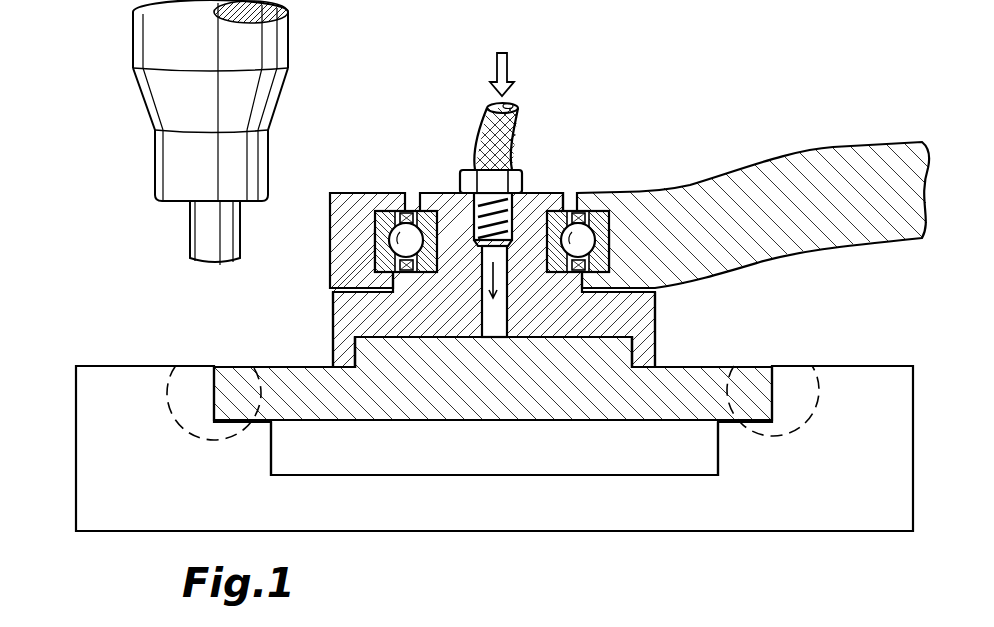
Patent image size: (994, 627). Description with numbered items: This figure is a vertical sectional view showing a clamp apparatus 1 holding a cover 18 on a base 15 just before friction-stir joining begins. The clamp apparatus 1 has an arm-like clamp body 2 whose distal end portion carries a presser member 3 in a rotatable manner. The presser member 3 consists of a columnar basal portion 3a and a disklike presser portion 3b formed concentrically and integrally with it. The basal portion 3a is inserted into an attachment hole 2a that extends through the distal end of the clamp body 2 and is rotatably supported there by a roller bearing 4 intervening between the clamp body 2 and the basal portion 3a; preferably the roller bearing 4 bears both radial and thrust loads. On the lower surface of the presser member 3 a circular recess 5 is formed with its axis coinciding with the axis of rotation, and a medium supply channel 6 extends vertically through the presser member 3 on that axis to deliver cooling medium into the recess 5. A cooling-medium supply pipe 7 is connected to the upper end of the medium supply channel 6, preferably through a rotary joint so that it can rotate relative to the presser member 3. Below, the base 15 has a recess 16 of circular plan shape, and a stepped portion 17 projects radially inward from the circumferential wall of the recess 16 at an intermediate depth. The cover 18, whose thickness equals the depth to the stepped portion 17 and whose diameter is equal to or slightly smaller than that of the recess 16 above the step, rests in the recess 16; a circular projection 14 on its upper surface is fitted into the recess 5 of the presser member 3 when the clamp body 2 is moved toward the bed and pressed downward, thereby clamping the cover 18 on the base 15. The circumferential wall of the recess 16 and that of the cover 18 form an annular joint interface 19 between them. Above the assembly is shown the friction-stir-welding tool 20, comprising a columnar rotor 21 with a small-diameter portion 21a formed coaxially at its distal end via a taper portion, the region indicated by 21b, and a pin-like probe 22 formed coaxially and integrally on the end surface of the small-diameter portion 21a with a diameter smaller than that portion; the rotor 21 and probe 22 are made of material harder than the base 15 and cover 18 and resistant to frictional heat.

The clamp apparatus 1 is at (497, 300).
The clamp body 2 is at (870, 153).
The attachment hole 2a is at (408, 207).
The presser member 3 is at (492, 240).
The basal portion 3a is at (537, 197).
The presser portion 3b is at (338, 315).
The roller bearing 4 is at (382, 213).
The recess 5 is at (493, 392).
The medium supply channel 6 is at (493, 327).
The cooling-medium supply pipe 7 is at (487, 120).
The projection 14 is at (623, 347).
The base 15 is at (489, 427).
The recess 16 is at (378, 478).
The stepped portion 17 is at (257, 420).
The cover 18 is at (715, 352).
The joint interface 19 is at (220, 387).
The friction-stir-welding tool 20 is at (159, 137).
The columnar rotor 21 is at (140, 35).
The small-diameter portion 21a is at (175, 160).
The shoulder 21b is at (175, 207).
The probe 22 is at (198, 245).